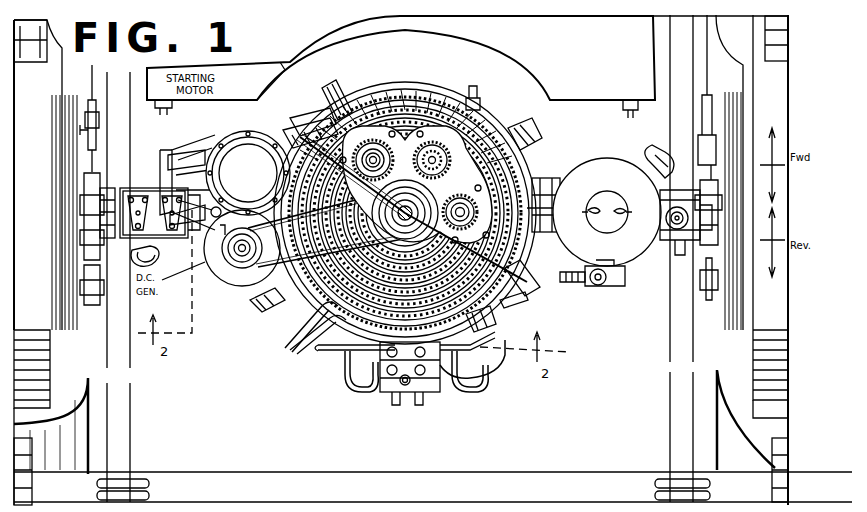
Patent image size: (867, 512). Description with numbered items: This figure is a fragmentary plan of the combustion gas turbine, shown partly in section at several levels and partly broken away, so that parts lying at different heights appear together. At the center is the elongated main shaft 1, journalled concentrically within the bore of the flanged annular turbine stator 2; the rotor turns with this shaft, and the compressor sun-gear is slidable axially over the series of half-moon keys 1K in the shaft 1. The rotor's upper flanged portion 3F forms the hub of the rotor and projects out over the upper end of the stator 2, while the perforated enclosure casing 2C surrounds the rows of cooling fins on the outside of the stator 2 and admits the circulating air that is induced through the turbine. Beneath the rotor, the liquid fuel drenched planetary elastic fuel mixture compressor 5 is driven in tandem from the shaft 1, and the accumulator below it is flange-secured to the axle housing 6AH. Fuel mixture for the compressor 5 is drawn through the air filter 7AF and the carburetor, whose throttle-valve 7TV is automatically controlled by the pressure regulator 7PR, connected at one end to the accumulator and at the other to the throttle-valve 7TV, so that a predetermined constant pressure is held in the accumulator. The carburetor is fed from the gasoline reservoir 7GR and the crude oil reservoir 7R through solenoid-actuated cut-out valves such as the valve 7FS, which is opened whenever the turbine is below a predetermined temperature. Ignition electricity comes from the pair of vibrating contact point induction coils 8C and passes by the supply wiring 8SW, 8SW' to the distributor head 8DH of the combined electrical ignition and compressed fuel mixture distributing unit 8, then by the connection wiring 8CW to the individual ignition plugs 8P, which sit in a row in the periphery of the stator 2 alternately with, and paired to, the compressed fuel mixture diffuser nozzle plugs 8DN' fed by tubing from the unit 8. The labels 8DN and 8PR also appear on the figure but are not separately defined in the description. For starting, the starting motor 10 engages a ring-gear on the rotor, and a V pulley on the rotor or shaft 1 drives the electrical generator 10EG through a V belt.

The main shaft 1 is at (402, 208).
The half-moon keys 1K is at (410, 209).
The turbine stator 2 is at (407, 100).
The perforated enclosure casing 2C is at (316, 118).
The upper flanged portion 3F is at (290, 300).
The elastic fuel mixture compressor 5 is at (425, 112).
The axle housing 6AH is at (546, 185).
The air filter 7AF is at (596, 168).
The automatic cut-out valve 7FS is at (672, 212).
The fuel reservoir 7GR is at (187, 100).
The pressure regulator 7PR is at (520, 283).
The fuel reservoir 7R is at (577, 95).
The throttle-valve 7TV is at (560, 206).
The combined electrical ignition and compressed fuel mixture distributing unit 8 is at (376, 386).
The electrical induction coils 8C is at (172, 190).
The electrical ignition connection wiring means 8CW is at (345, 376).
The distributor head 8DH is at (398, 385).
The detent 8DN is at (310, 116).
The compressed fuel mixture diffuser nozzle plugs 8DN' is at (412, 224).
The ignition plugs 8P is at (335, 88).
The pawl ring 8PR is at (372, 118).
The electrical ignition supply wiring 8SW is at (457, 375).
The electrical ignition supply wiring 8SW' is at (472, 368).
The starting motor 10 is at (238, 160).
The electrical generator 10EG is at (225, 270).